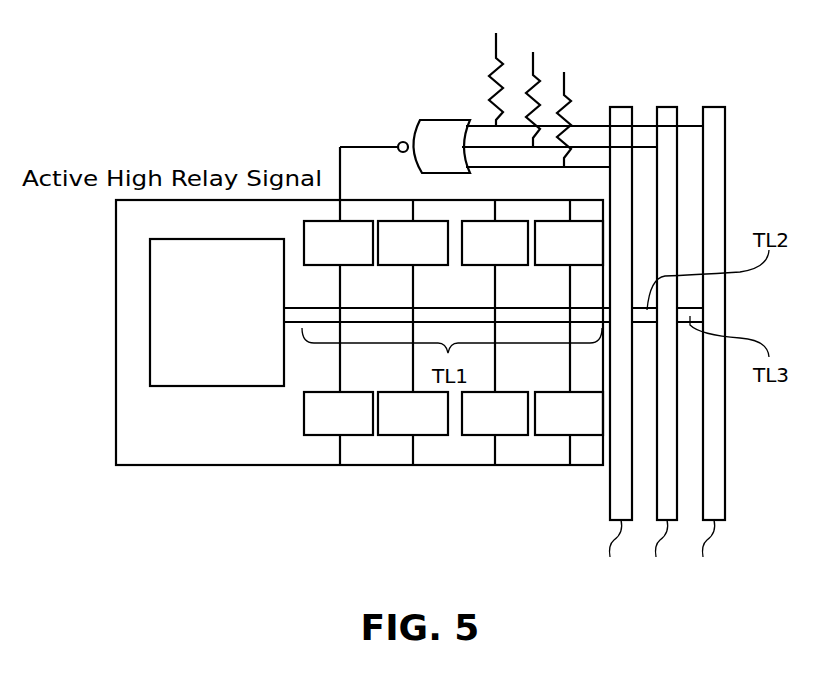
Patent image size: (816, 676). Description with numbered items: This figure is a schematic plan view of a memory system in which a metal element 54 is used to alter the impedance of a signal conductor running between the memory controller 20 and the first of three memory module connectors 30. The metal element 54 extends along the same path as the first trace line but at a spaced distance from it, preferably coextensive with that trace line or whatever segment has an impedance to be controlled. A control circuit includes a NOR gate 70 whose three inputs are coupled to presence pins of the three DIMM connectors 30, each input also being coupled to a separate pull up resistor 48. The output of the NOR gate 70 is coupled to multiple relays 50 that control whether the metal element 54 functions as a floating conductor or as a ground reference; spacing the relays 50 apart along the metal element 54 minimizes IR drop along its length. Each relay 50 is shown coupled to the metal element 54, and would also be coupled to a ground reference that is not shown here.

The memory controller 20 is at (210, 239).
The DIMM connector 30 is at (623, 107).
The pull up resistor 48 is at (497, 46).
The relay 50 is at (438, 221).
The metal element 54 is at (436, 308).
The NOR gate 70 is at (443, 120).